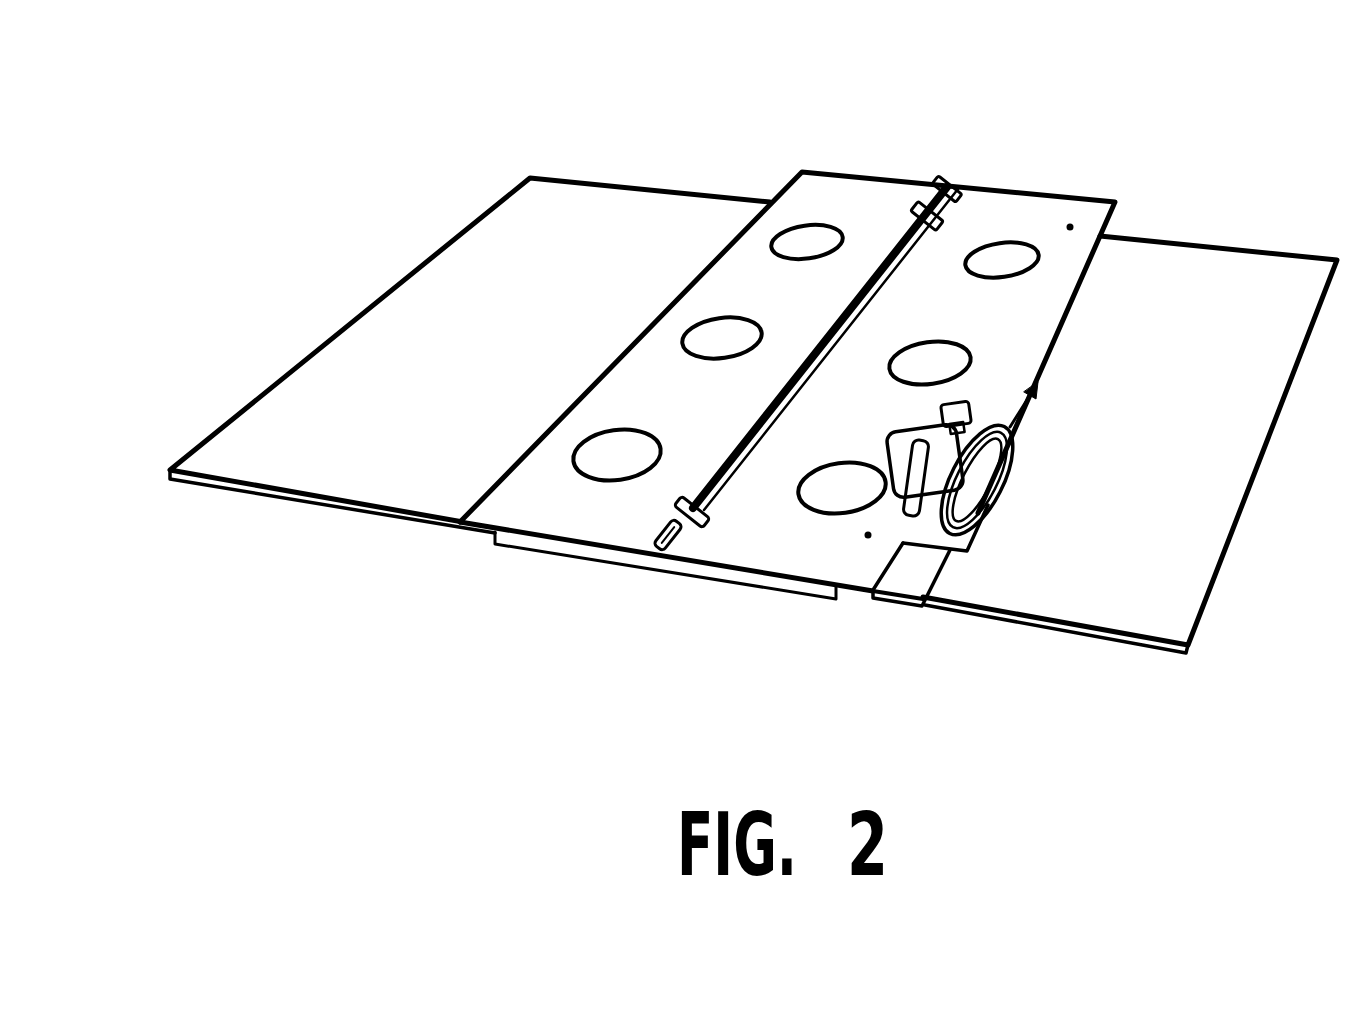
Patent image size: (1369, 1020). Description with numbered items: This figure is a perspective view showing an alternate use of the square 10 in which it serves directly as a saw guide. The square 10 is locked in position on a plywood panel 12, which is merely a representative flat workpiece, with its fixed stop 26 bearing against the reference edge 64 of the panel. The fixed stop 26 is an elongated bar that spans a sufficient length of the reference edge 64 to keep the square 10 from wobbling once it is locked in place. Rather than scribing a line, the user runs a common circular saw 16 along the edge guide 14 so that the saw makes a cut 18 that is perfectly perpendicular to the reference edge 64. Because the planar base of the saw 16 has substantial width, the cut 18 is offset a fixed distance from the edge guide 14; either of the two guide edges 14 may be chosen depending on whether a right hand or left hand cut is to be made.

The square 10 is at (860, 176).
The plywood panel 12 is at (445, 242).
The edge guide 14 is at (723, 250).
The saw 16 is at (887, 477).
The cut 18 is at (923, 600).
The fixed stop 26 is at (550, 552).
The reference edge 64 is at (1102, 637).